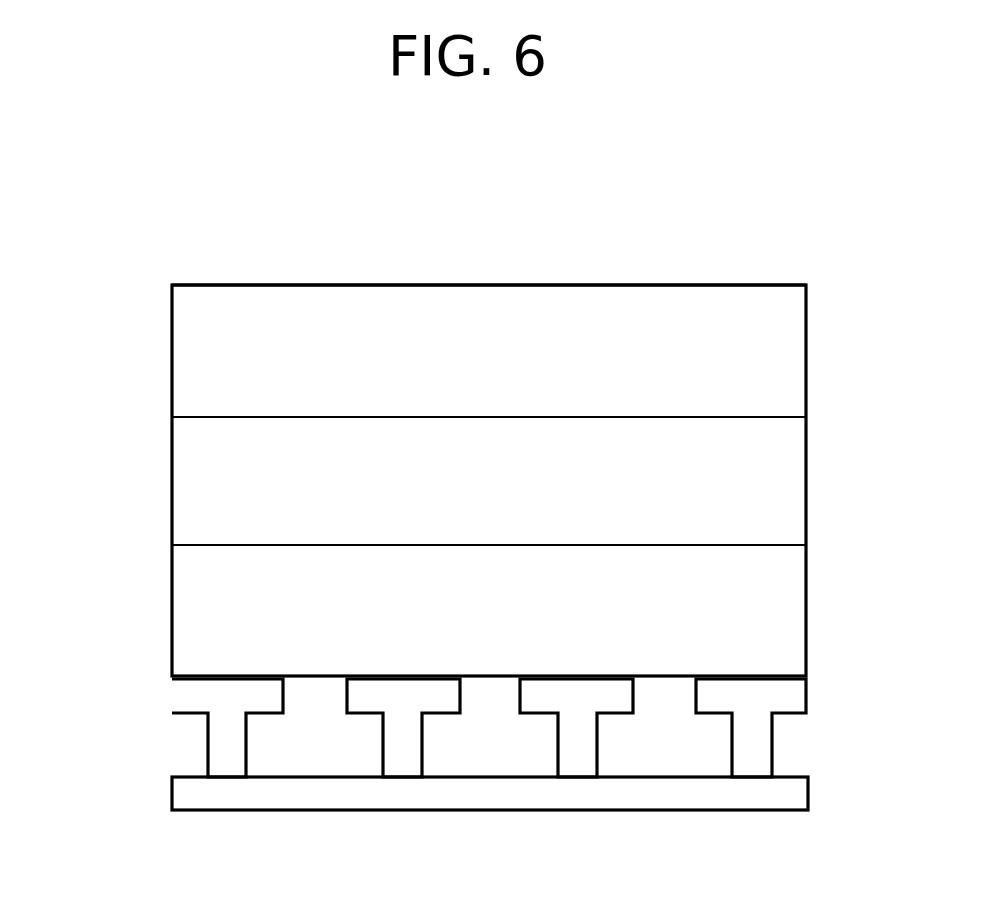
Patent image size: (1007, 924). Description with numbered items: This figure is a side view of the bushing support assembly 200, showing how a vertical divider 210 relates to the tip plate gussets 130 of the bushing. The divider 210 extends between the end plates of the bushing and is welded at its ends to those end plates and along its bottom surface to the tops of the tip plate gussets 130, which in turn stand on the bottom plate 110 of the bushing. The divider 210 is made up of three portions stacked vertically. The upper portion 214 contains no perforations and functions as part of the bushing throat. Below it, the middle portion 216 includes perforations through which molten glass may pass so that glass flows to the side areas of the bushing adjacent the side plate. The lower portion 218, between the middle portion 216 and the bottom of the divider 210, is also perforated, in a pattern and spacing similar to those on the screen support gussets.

The bushing support assembly 200 is at (303, 232).
The divider 210 is at (548, 285).
The upper portion 214 is at (193, 357).
The middle portion 216 is at (193, 481).
The lower portion 218 is at (193, 601).
The tip plate gussets 130 is at (757, 745).
The bottom plate 110 is at (667, 797).